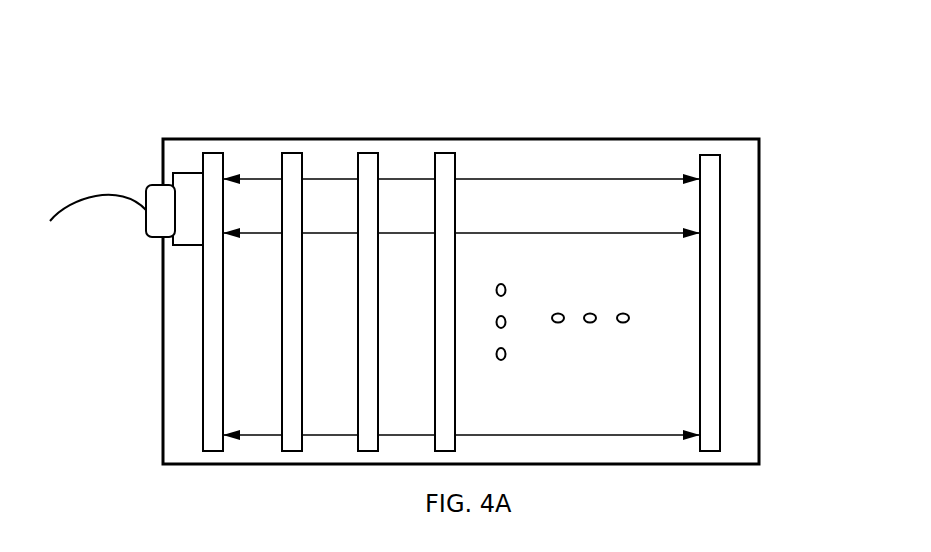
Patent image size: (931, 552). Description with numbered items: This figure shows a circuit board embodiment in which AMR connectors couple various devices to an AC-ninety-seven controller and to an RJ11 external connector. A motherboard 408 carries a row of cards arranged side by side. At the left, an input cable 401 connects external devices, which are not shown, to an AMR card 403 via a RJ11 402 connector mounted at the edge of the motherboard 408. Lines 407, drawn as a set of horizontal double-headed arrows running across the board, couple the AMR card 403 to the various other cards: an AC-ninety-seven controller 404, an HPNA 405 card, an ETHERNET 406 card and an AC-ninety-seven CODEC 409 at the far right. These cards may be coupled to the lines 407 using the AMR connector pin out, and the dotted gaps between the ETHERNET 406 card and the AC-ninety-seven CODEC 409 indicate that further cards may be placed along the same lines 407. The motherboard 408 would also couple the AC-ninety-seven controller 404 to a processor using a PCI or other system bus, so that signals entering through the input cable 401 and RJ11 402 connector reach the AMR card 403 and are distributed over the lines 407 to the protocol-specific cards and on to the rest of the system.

The input cable 401 is at (83, 210).
The RJ11 connector 402 is at (189, 173).
The AMR card 403 is at (213, 153).
The AC-97 controller 404 is at (298, 153).
The HPNA 405 is at (372, 153).
The ETHERNET 406 is at (447, 153).
The lines 407 is at (535, 233).
The motherboard 408 is at (610, 139).
The AC-97 CODEC 409 is at (720, 153).